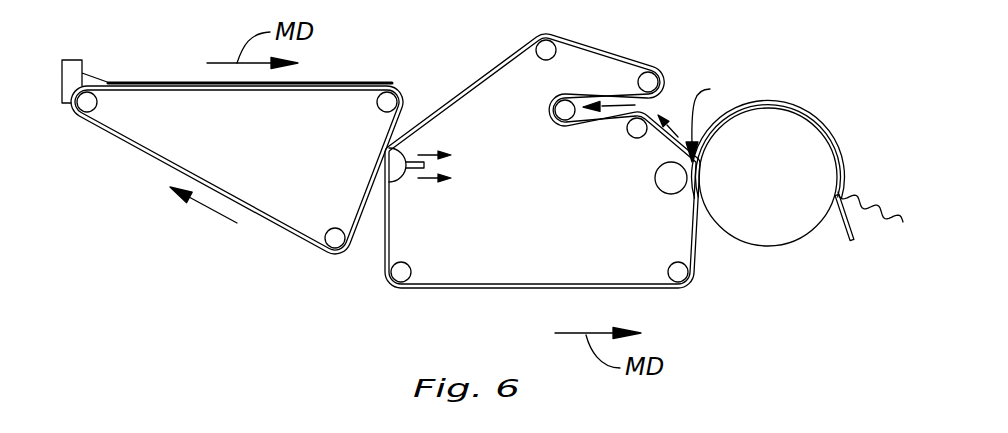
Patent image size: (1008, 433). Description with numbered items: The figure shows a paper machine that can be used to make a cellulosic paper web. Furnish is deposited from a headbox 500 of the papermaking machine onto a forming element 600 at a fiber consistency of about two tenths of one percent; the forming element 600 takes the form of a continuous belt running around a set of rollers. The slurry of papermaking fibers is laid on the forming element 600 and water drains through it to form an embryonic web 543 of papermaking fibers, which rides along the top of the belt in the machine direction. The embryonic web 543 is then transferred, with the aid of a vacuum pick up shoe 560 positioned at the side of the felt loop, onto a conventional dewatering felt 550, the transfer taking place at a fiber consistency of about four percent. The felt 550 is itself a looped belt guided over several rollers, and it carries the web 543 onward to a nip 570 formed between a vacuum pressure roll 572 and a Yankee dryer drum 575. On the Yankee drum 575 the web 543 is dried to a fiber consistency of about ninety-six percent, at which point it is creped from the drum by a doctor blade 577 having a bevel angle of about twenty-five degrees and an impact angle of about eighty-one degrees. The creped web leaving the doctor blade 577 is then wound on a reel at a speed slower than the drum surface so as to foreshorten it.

The headbox 500 is at (85, 68).
The embryonic web 543 is at (330, 85).
The dewatering felt 550 is at (440, 110).
The vacuum pick up shoe 560 is at (408, 182).
The nip 570 is at (722, 120).
The vacuum pressure roll 572 is at (662, 185).
The Yankee dryer drum 575 is at (785, 230).
The doctor blade 577 is at (853, 242).
The forming element 600 is at (268, 92).